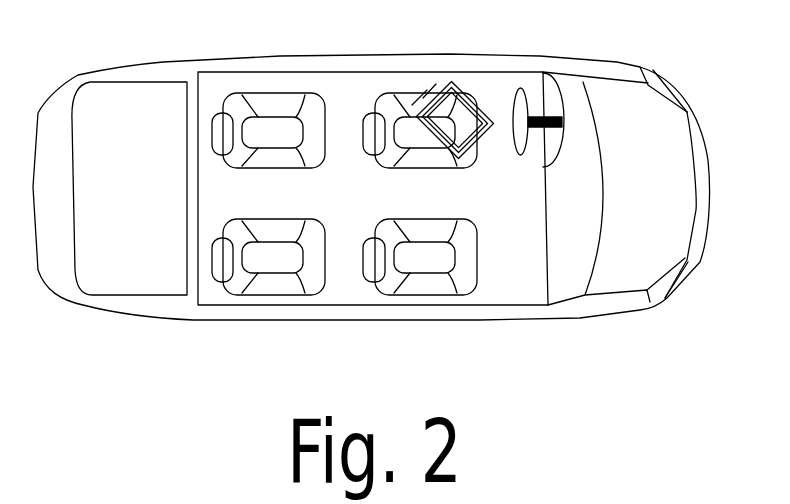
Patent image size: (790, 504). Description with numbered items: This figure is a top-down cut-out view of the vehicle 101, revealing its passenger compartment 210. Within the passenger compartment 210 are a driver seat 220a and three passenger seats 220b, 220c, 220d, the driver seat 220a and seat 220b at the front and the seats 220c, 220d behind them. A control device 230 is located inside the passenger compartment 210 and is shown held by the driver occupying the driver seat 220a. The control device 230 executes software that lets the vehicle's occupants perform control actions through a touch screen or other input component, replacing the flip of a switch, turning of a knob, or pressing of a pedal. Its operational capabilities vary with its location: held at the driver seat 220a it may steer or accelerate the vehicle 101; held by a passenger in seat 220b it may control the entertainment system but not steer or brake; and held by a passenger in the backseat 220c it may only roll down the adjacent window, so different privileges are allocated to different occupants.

The vehicle 101 is at (163, 62).
The passenger compartment 210 is at (498, 90).
The driver seat 220a is at (412, 168).
The passenger seat 220b is at (412, 219).
The backseat 220c is at (262, 219).
The passenger seat 220d is at (280, 168).
The control device 230 is at (493, 126).